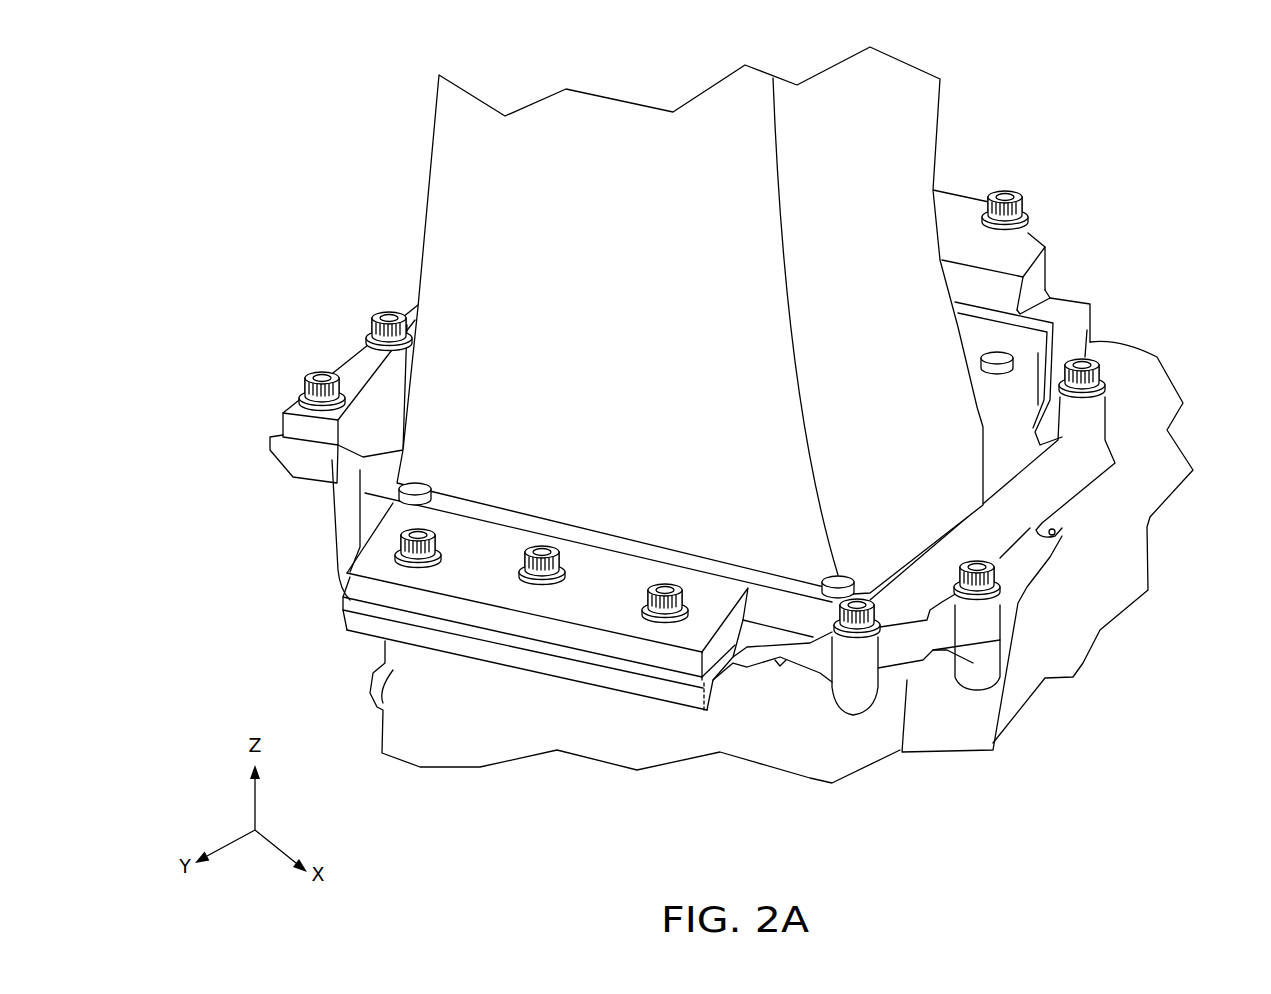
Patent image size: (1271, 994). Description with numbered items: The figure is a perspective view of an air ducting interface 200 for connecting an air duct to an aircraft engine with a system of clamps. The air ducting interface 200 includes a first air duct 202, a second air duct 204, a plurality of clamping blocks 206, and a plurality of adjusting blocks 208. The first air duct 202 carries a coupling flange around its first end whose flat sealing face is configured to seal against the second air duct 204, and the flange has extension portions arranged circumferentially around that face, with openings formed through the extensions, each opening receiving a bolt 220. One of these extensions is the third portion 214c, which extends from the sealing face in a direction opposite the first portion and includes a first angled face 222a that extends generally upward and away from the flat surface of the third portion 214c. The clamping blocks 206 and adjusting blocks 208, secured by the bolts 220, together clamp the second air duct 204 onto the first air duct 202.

The air ducting interface 200 is at (240, 150).
The first air duct 202 is at (251, 665).
The second air duct 204 is at (970, 97).
The clamping blocks 206 is at (1035, 268).
The adjusting blocks 208 is at (363, 358).
The bolt 220 is at (322, 370).
The first angled face 222a is at (552, 662).
The third portion 214c is at (727, 682).